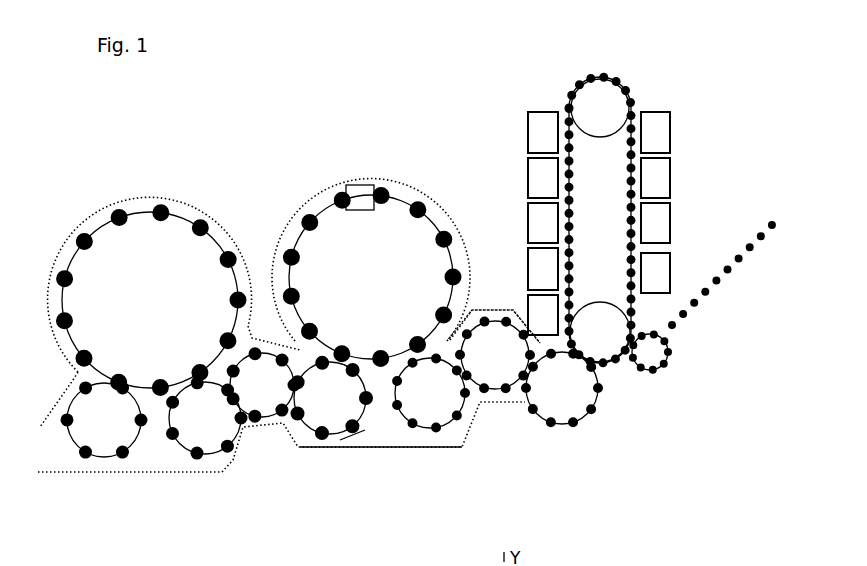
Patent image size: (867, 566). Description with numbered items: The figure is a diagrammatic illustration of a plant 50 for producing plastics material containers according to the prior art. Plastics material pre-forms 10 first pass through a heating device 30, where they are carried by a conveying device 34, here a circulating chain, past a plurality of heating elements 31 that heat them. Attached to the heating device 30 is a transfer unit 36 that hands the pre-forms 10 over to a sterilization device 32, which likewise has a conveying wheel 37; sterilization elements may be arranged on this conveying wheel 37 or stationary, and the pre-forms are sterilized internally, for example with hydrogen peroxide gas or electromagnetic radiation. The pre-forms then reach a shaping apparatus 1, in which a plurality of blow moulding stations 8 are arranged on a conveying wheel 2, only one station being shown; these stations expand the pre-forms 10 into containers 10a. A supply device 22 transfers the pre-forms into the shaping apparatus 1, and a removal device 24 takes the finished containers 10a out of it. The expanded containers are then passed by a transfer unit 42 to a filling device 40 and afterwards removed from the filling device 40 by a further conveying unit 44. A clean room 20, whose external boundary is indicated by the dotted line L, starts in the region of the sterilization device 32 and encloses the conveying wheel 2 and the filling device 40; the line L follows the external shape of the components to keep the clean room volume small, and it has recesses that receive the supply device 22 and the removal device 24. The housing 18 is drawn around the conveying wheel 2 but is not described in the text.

The shaping apparatus 1 is at (353, 152).
The conveying wheel 2 is at (422, 257).
The blow moulding station 8 is at (374, 200).
The plastics material pre-form 10 is at (680, 327).
The container 10a is at (357, 433).
The housing 18 is at (423, 190).
The clean room 20 is at (305, 180).
The supply device 22 is at (450, 405).
The removal device 24 is at (323, 427).
The heating device 30 is at (554, 74).
The heating element 31 is at (542, 133).
The sterilization device 32 is at (493, 280).
The conveying device 34 is at (602, 100).
The transfer unit 36 is at (553, 400).
The conveying wheel 37 is at (495, 375).
The filling device 40 is at (120, 240).
The transfer unit 42 is at (222, 418).
The conveying unit 44 is at (88, 428).
The plant 50 is at (286, 84).
The dotted line L is at (383, 447).